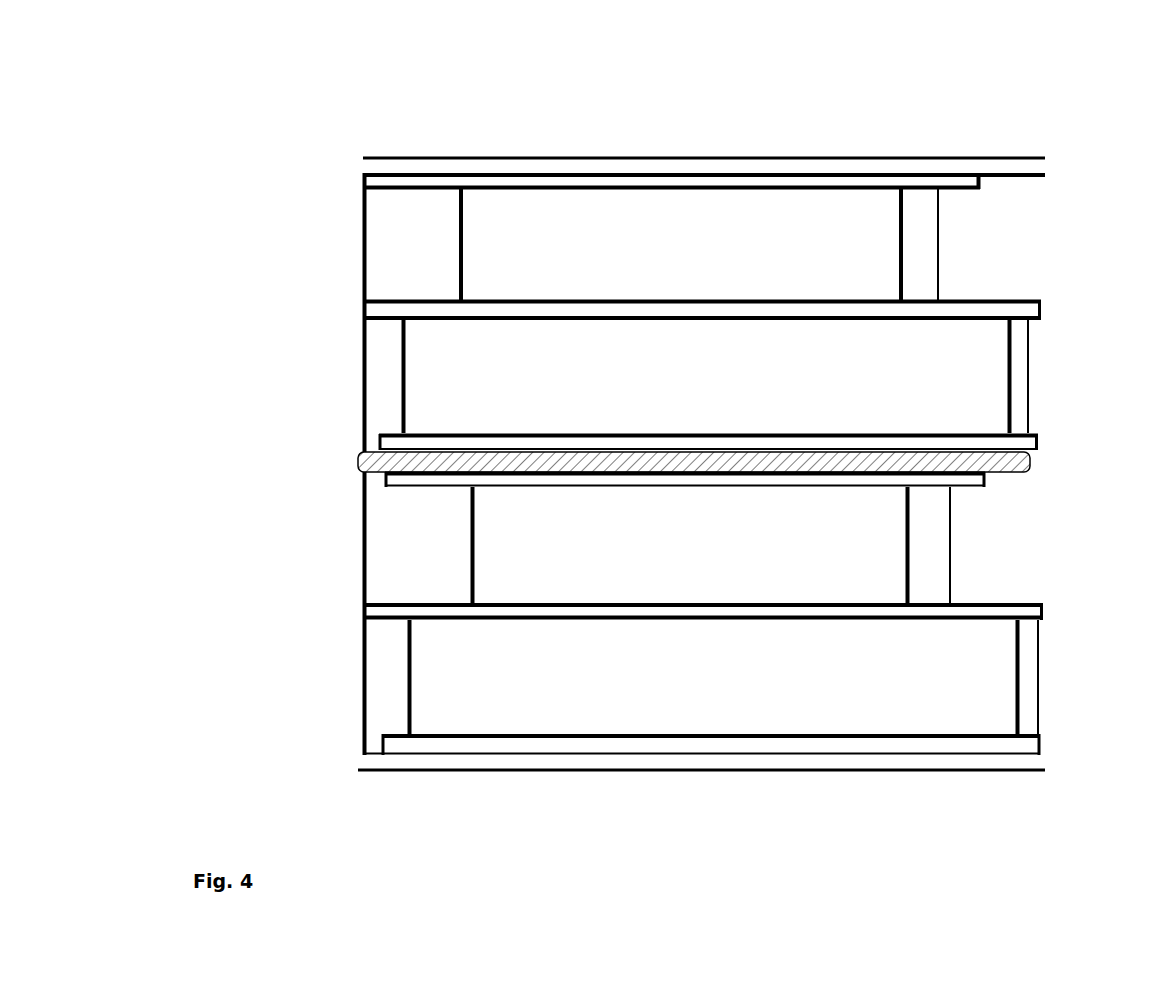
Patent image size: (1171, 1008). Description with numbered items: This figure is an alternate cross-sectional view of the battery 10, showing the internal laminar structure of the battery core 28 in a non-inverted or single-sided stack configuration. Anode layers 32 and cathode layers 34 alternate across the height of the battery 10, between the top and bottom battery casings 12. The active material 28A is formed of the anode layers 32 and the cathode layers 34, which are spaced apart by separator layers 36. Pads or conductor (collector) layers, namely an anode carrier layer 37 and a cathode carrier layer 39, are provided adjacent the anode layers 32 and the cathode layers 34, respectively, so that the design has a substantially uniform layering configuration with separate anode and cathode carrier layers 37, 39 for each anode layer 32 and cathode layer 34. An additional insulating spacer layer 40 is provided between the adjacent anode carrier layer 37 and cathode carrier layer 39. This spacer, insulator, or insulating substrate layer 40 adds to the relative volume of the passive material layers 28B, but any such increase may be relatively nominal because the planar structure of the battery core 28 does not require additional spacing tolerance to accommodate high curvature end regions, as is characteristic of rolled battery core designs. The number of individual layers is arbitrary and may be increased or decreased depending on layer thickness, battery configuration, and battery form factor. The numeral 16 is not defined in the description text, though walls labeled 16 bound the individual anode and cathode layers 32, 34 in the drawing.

The battery 10 is at (266, 80).
The battery casings 12 is at (583, 163).
The spacer wall 16 is at (421, 267).
The battery core 28 is at (1082, 250).
The active material 28A is at (350, 190).
The passive material layers 28B is at (315, 302).
The anode layers 32 is at (948, 403).
The cathode layers 34 is at (818, 261).
The separator layers 36 is at (1025, 310).
The anode carrier layer 37 is at (1037, 440).
The cathode carrier layer 39 is at (793, 180).
The insulating spacer layer 40 is at (1022, 458).